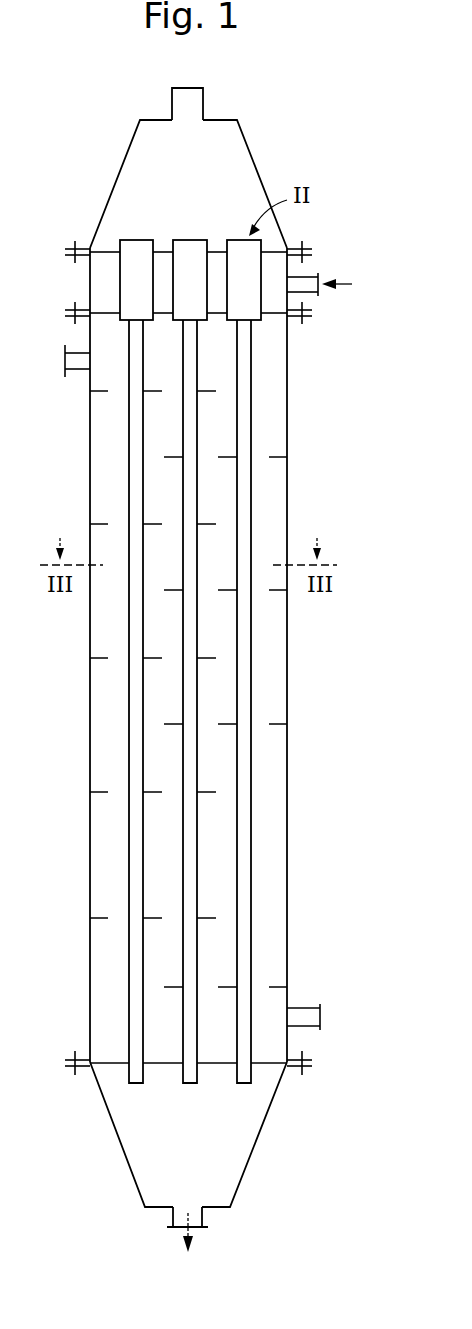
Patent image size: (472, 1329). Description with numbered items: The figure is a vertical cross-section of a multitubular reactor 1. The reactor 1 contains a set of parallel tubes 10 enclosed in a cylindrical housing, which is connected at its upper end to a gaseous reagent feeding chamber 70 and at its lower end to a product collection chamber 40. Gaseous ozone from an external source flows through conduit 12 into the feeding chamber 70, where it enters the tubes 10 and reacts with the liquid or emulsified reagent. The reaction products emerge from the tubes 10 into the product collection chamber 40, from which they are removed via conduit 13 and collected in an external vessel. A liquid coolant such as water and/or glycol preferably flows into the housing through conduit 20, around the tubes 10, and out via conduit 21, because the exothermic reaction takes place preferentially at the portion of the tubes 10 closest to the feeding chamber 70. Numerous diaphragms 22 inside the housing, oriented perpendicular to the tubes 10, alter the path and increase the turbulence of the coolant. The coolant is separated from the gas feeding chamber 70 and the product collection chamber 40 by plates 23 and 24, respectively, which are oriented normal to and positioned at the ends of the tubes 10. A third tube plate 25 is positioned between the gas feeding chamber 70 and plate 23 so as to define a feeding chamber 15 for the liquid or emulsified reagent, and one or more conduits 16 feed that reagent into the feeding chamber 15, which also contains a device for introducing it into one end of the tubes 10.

The reactor 1 is at (291, 656).
The tubes 10 is at (243, 430).
The conduit 12 is at (190, 113).
The conduit 13 is at (198, 1221).
The feeding chamber 15 is at (213, 262).
The conduits 16 is at (320, 296).
The conduit 20 is at (78, 367).
The conduit 21 is at (320, 1010).
The diaphragms 22 is at (152, 524).
The plate 23 is at (163, 321).
The plate 24 is at (93, 1060).
The third tube plate 25 is at (103, 250).
The product collection chamber 40 is at (208, 1151).
The gaseous reagent feeding chamber 70 is at (238, 163).